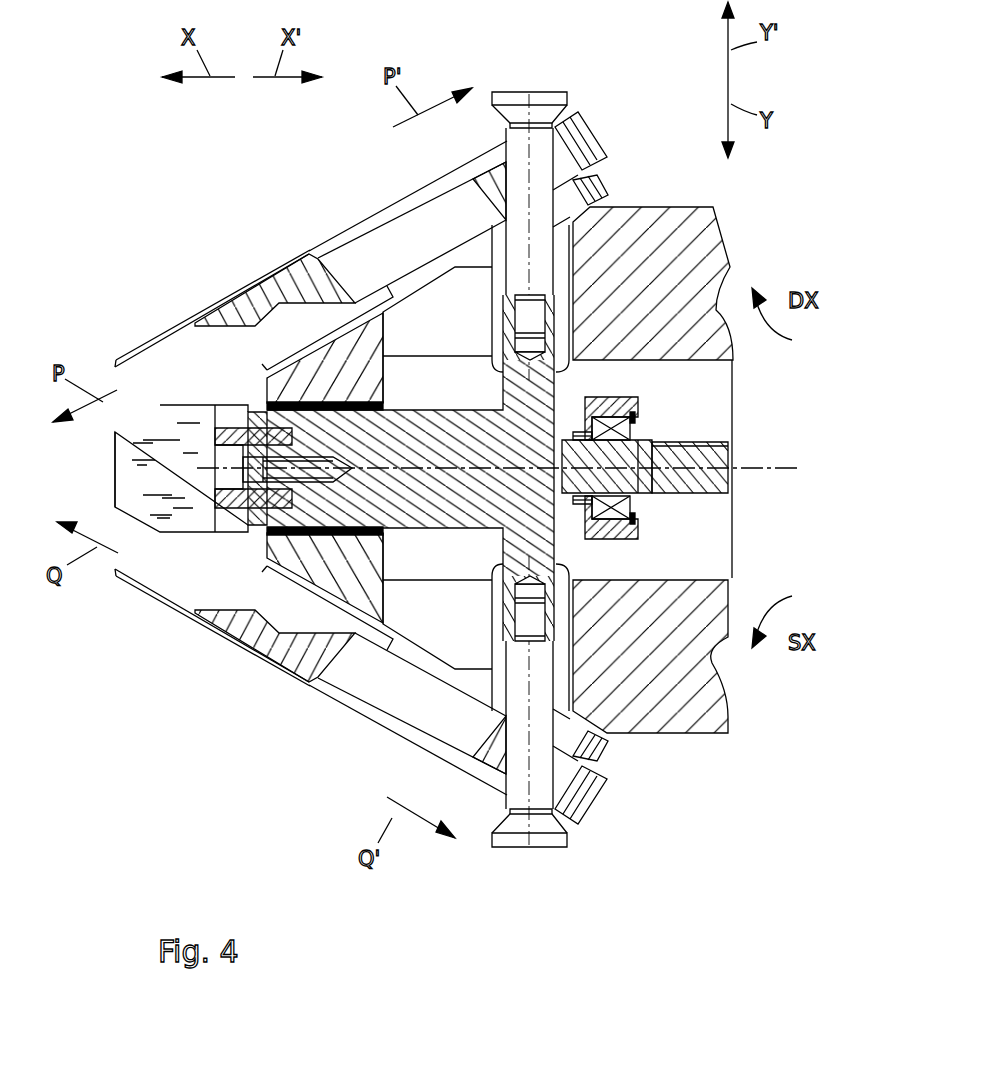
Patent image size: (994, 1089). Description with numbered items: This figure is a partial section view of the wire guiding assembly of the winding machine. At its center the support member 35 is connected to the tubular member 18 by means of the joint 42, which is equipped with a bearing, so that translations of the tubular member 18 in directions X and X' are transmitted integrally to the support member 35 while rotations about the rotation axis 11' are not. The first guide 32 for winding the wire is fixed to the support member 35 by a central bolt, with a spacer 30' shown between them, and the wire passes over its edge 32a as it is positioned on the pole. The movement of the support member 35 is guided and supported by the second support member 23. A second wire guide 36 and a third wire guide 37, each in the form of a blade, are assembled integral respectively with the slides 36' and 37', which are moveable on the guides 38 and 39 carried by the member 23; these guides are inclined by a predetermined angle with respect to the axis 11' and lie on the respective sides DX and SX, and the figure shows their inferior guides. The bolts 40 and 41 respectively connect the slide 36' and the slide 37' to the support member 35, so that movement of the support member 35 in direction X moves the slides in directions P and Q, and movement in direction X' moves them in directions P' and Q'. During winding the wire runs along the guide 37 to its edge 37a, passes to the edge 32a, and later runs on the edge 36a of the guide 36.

The rotation axis 11' is at (498, 431).
The tubular member 18 is at (666, 503).
The second support member 23 is at (682, 272).
The spacer ring 30' is at (231, 496).
The first guide 32 is at (165, 410).
The edge of first guide 32a is at (113, 468).
The support member 35 is at (415, 442).
The second wire guide 36 is at (359, 233).
The edge of second wire guide 36a is at (118, 362).
The slide 36' is at (605, 121).
The third wire guide 37 is at (365, 702).
The edge of third wire guide 37a is at (120, 578).
The slide 37' is at (612, 821).
The guide 38 is at (600, 186).
The guide 39 is at (600, 745).
The bolt 40 is at (545, 95).
The bolt 41 is at (540, 850).
The joint 42 is at (630, 458).